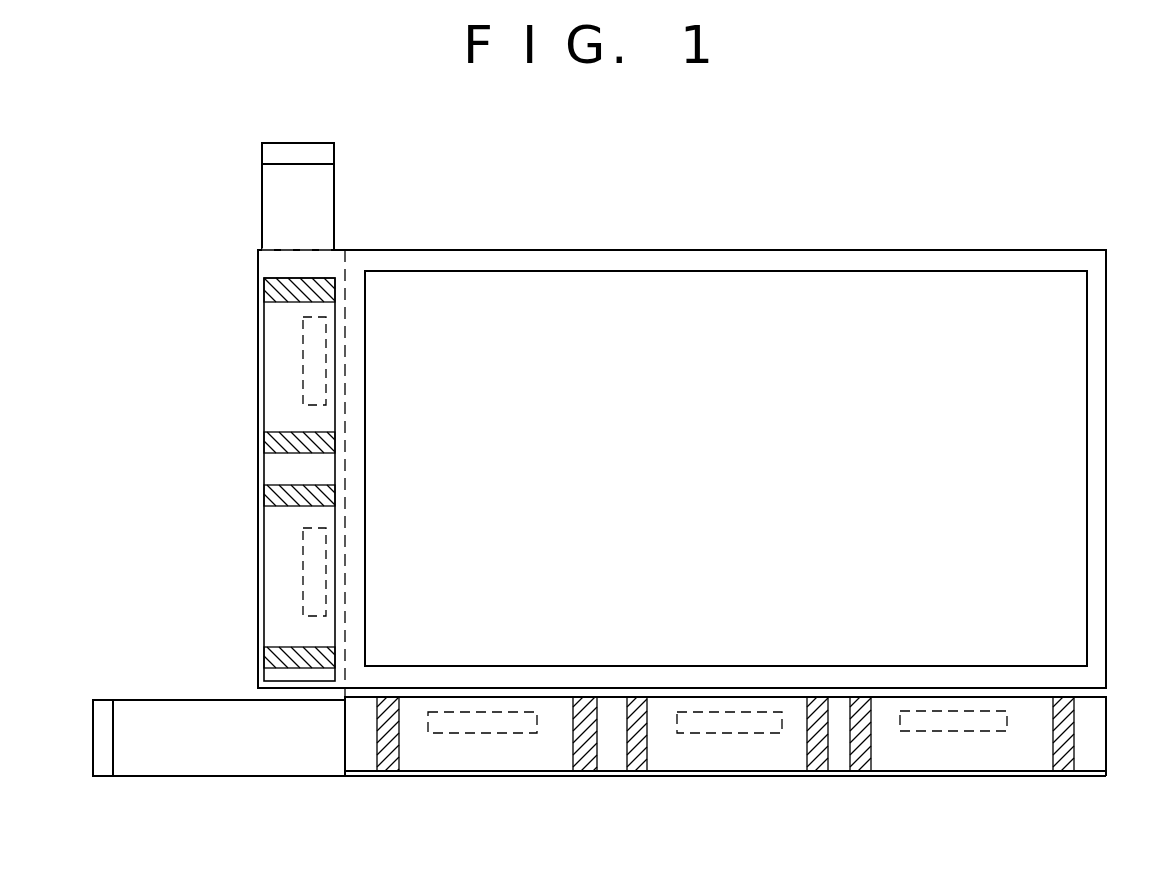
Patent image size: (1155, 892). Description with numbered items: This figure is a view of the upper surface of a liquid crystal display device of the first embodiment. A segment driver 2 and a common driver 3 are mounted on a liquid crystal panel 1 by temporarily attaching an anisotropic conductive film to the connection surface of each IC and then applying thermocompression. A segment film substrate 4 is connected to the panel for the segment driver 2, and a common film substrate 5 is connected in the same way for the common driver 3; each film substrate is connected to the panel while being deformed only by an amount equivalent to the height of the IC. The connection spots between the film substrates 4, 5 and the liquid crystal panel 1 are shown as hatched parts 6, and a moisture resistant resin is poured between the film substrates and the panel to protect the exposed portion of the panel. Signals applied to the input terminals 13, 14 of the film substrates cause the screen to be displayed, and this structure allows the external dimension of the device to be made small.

The liquid crystal panel 1 is at (910, 288).
The segment driver 2 is at (490, 723).
The common driver 3 is at (313, 562).
The segment film substrate 4 is at (252, 762).
The common film substrate 5 is at (323, 224).
The hatched parts 6 is at (862, 755).
The input terminal 13 is at (322, 155).
The input terminal 14 is at (103, 710).